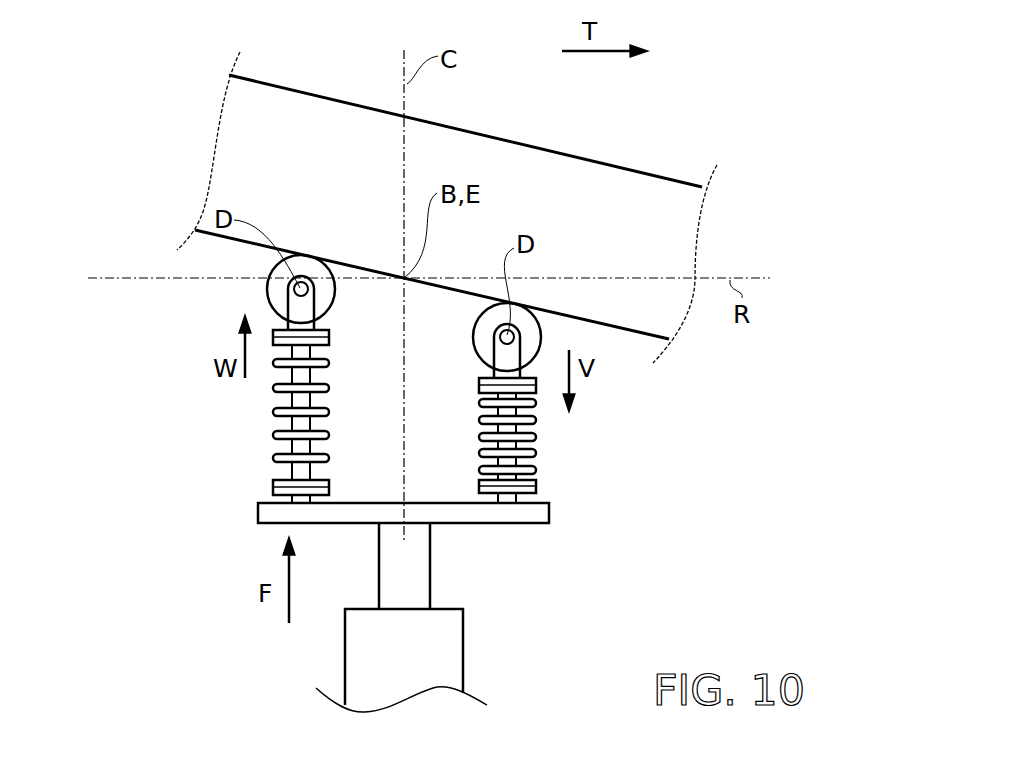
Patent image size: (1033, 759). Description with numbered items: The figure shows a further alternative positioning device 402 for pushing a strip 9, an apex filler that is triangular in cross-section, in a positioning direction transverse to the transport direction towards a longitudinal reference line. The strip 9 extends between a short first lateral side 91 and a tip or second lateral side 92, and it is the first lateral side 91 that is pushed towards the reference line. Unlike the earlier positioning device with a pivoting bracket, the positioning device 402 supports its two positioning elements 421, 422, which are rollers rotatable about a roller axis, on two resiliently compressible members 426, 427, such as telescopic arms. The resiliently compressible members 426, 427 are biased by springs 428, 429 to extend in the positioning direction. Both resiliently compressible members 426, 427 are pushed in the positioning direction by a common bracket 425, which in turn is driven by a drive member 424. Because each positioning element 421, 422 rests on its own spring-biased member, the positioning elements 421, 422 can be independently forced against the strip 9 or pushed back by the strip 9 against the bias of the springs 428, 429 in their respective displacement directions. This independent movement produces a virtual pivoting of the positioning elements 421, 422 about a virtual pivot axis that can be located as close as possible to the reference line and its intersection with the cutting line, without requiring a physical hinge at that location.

The strip 9 is at (447, 219).
The second lateral side 92 is at (322, 97).
The first lateral side 91 is at (620, 336).
The positioning device 402 is at (384, 483).
The first positioning element 421 is at (478, 341).
The second positioning element 422 is at (268, 295).
The drive member 424 is at (370, 617).
The bracket 425 is at (525, 515).
The resiliently compressible member 426 is at (510, 445).
The resiliently compressible member 427 is at (293, 420).
The spring 428 is at (535, 468).
The spring 429 is at (283, 462).